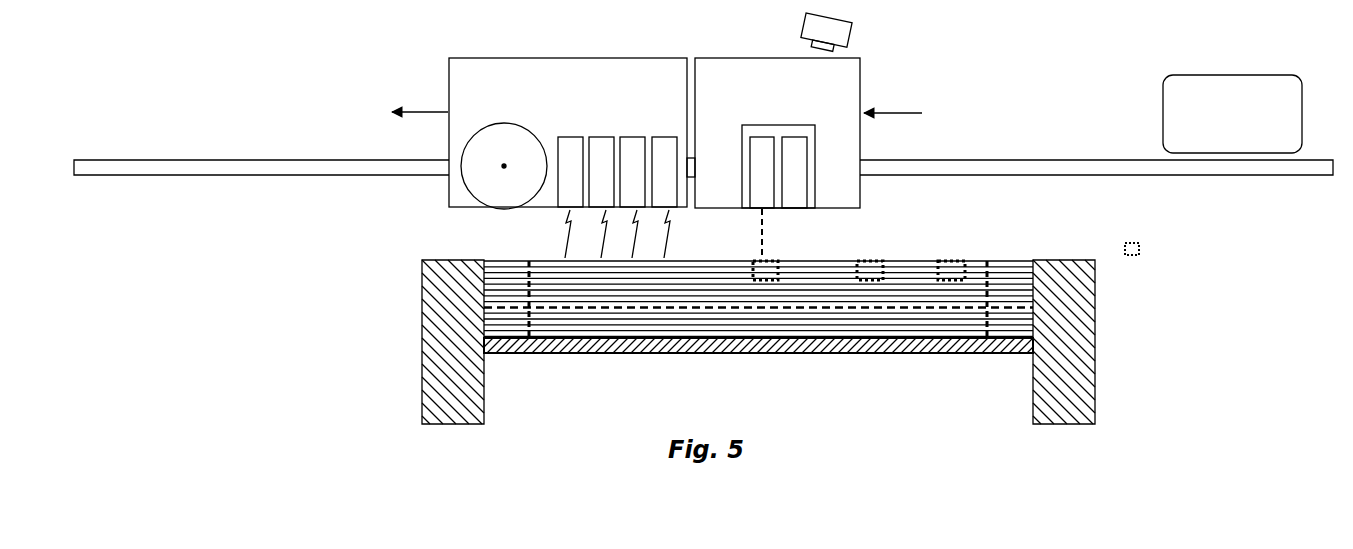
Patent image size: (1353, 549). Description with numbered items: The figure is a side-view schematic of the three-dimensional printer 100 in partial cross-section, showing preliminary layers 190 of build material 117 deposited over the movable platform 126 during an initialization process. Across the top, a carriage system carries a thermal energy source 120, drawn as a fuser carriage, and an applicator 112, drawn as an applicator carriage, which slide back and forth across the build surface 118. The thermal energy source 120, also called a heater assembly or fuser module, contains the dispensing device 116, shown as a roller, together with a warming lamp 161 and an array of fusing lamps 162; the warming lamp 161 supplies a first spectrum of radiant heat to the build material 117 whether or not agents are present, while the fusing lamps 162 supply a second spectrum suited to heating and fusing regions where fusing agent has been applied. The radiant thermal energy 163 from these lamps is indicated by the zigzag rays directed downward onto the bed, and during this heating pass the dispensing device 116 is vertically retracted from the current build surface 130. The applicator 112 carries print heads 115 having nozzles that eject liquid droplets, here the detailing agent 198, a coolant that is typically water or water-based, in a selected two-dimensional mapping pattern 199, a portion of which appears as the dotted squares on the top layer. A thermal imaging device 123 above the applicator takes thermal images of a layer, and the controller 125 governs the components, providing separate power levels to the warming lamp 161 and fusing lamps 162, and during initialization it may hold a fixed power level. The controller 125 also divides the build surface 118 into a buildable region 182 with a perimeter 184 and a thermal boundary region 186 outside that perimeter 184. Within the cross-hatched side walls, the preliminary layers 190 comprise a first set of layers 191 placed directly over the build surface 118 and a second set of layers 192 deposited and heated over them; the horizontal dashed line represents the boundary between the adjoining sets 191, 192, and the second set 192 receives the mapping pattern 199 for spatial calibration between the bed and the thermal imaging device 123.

The printer 100 is at (181, 66).
The applicator 112 is at (847, 98).
The print heads 115 is at (757, 188).
The dispensing device 116 is at (480, 183).
The build material 117 is at (498, 263).
The build surface 118 is at (561, 330).
The thermal energy source 120 is at (458, 90).
The thermal imaging device 123 is at (808, 38).
The controller 125 is at (1222, 75).
The movable platform 126 is at (487, 347).
The current build surface 130 is at (975, 253).
The warming lamp 161 is at (572, 137).
The fusing lamps 162 is at (667, 137).
The radiant thermal energy 163 is at (560, 220).
The buildable region 182 is at (540, 328).
The perimeter 184 is at (758, 369).
The thermal boundary region 186 is at (515, 328).
The preliminary layers 190 is at (671, 273).
The first set of layers 191 is at (1015, 328).
The second set of layers 192 is at (1015, 297).
The detailing agent 198 is at (765, 237).
The mapping pattern 199 is at (873, 260).